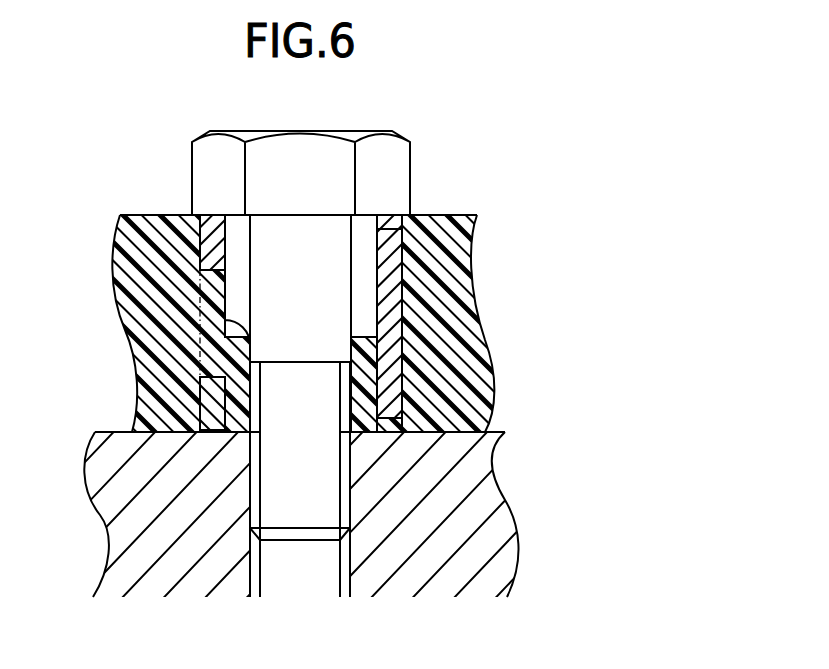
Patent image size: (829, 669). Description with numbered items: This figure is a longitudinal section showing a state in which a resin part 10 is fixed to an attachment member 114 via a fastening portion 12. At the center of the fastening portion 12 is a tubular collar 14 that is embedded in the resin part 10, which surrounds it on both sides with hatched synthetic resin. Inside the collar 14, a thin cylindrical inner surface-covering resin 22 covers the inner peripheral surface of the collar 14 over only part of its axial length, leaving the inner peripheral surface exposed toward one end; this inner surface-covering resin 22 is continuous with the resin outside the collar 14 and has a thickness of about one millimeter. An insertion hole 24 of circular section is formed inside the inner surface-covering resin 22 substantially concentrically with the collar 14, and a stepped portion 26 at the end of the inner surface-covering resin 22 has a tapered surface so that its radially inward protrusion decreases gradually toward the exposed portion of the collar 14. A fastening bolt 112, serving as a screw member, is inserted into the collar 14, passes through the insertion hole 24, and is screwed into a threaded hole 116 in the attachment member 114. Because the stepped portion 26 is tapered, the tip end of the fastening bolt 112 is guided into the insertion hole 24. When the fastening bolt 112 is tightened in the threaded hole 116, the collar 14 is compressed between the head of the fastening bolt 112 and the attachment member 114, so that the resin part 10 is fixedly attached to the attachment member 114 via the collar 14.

The resin part 10 is at (128, 246).
The fastening portion 12 is at (347, 334).
The collar 14 is at (393, 285).
The inner surface-covering resin 22 is at (233, 394).
The insertion hole 24 is at (356, 395).
The stepped portion 26 is at (198, 304).
The fastening bolt 112 is at (297, 167).
The attachment member 114 is at (128, 513).
The threaded hole 116 is at (340, 567).